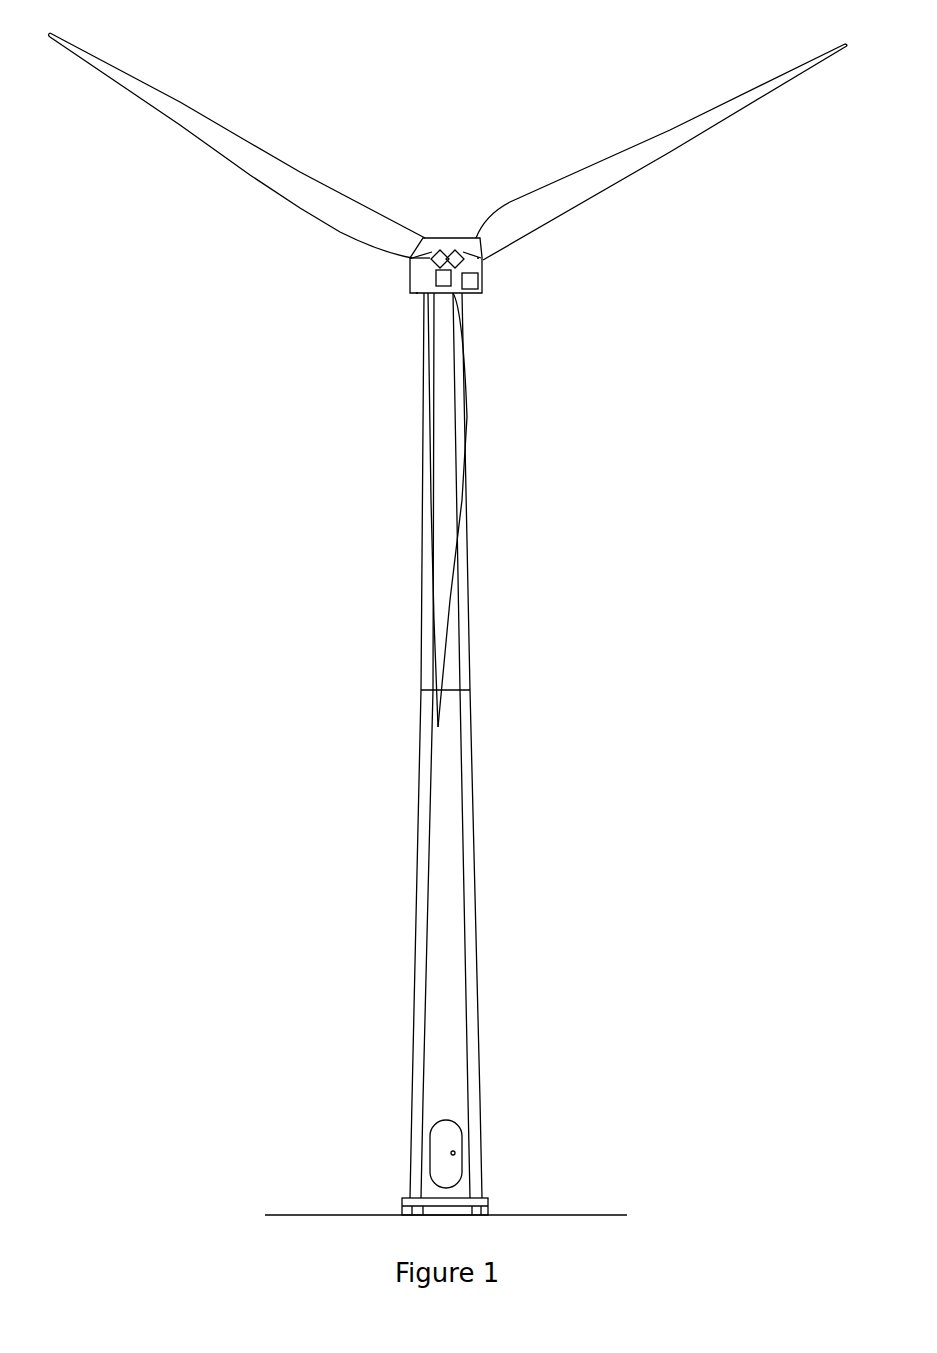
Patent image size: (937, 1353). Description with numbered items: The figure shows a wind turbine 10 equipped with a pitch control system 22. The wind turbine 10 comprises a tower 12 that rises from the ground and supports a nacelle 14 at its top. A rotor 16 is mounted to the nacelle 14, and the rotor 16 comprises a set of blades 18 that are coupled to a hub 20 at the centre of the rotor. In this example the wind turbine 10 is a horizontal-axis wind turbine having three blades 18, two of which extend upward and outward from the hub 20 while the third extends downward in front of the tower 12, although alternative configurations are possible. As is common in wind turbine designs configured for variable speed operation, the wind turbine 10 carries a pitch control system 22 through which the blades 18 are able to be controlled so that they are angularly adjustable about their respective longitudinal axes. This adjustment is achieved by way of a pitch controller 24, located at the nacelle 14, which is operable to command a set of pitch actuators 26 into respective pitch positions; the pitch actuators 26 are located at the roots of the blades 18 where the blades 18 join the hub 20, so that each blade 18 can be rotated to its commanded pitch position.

The wind turbine 10 is at (322, 594).
The tower 12 is at (473, 740).
The nacelle 14 is at (448, 254).
The rotor 16 is at (319, 337).
The blades 18 is at (737, 112).
The hub 20 is at (441, 254).
The pitch control system 22 is at (406, 206).
The pitch controller 24 is at (483, 285).
The pitch actuators 26 is at (410, 257).